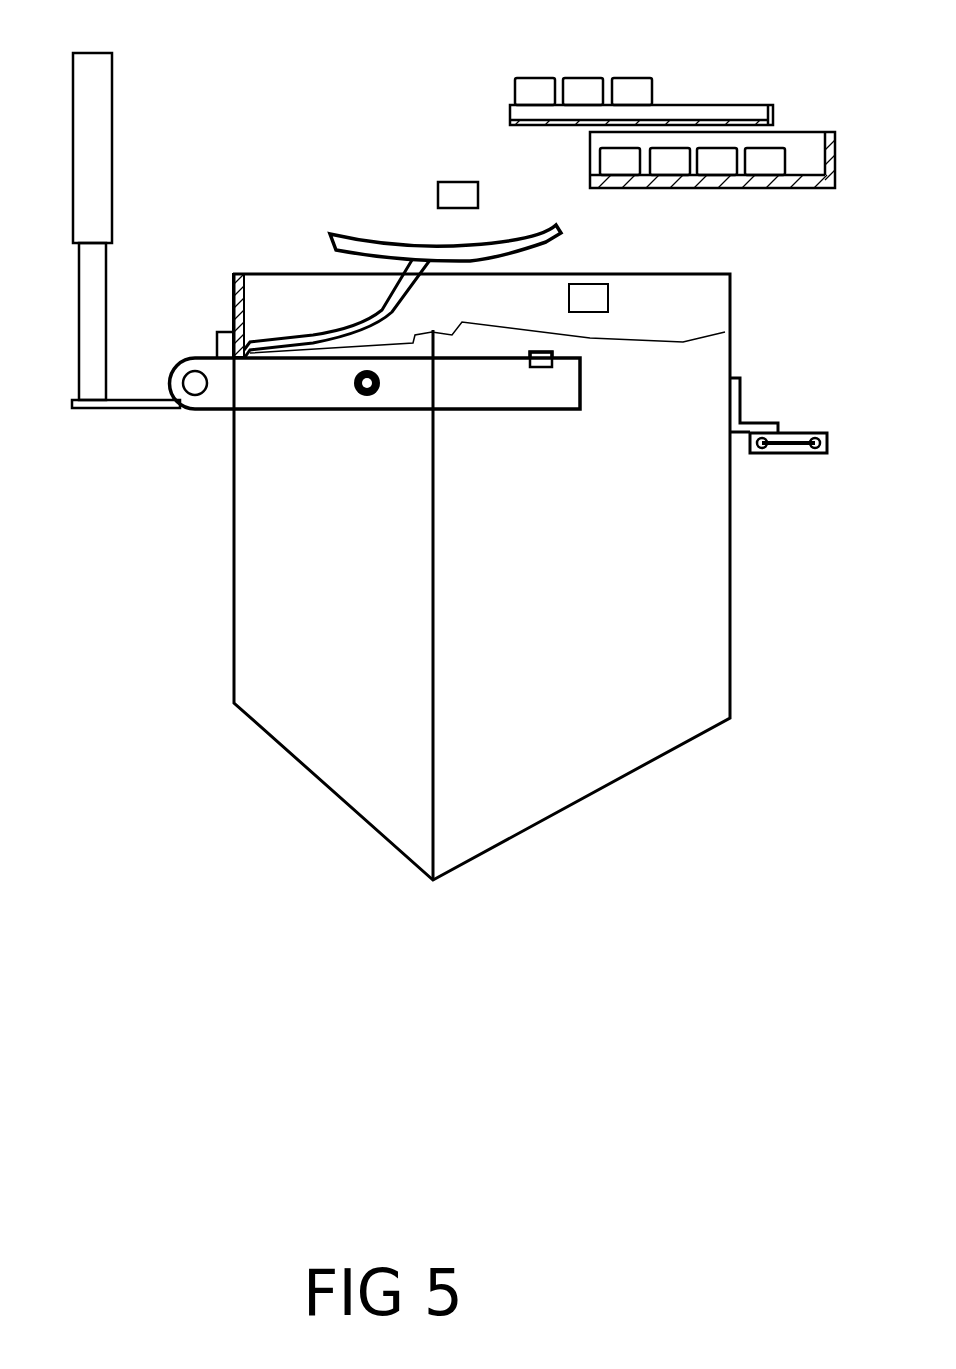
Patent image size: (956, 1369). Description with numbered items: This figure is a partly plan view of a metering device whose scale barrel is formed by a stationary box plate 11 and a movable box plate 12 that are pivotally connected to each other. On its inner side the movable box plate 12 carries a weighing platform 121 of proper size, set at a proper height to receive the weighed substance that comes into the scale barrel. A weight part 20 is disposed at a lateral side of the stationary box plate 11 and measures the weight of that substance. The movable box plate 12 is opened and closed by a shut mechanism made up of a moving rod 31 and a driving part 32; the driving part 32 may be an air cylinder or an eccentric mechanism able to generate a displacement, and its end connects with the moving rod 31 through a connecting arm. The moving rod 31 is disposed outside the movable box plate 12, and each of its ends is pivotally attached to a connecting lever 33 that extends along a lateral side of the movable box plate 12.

The stationary box plate 11 is at (690, 350).
The movable box plate 12 is at (277, 525).
The weighing platform 121 is at (560, 240).
The weight part 20 is at (807, 448).
The moving rod 31 is at (198, 378).
The driving part 32 is at (97, 112).
The connecting lever 33 is at (197, 412).